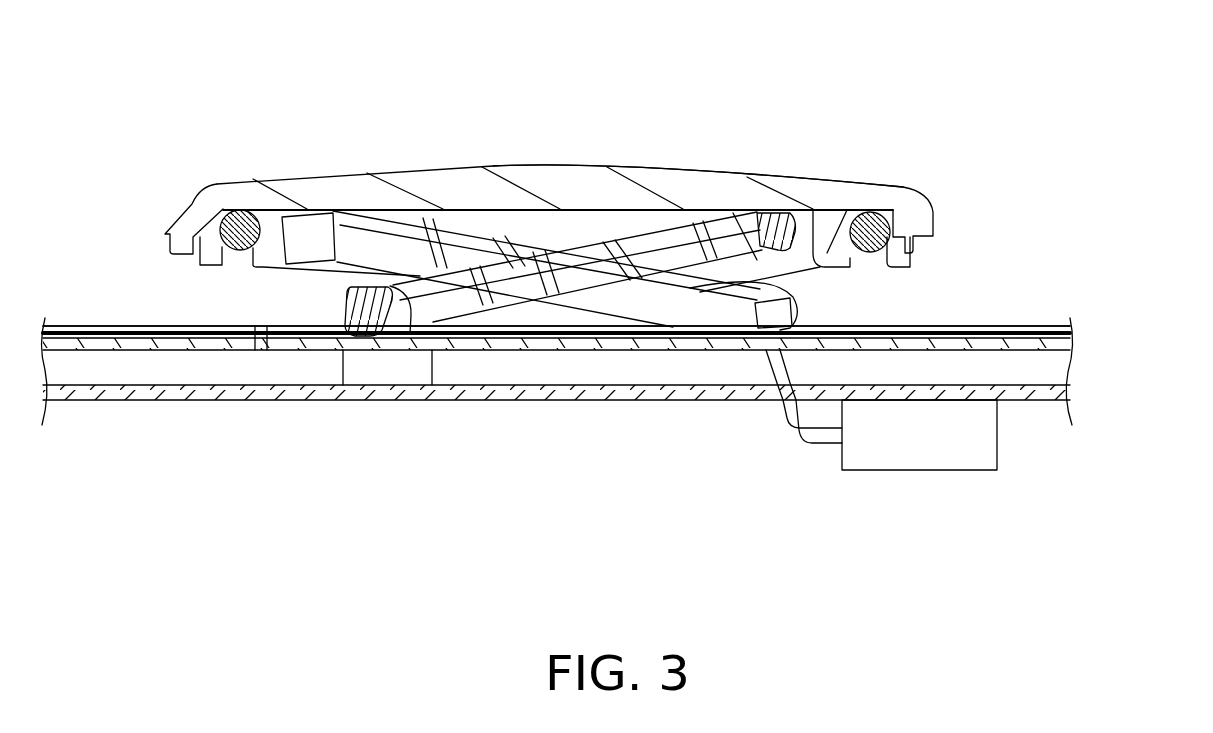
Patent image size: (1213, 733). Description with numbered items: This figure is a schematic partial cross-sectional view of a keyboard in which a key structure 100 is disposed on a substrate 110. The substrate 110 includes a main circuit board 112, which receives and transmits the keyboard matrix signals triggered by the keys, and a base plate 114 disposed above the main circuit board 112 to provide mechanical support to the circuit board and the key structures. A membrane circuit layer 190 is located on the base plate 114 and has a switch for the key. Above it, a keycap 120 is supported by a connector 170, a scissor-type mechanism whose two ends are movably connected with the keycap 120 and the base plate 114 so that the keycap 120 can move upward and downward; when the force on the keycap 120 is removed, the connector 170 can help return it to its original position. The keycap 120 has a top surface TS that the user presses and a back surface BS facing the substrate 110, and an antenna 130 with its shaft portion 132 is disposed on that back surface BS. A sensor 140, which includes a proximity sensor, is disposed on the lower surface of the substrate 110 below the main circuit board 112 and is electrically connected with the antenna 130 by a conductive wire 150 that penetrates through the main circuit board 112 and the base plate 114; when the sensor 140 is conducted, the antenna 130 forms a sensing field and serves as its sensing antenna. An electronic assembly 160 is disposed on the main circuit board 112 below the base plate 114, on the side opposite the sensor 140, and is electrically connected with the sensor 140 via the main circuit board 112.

The key structure 100 is at (905, 82).
The substrate 110 is at (619, 371).
The main circuit board 112 is at (1066, 393).
The base plate 114 is at (1066, 344).
The keycap 120 is at (742, 185).
The antenna 130 is at (238, 209).
The fastener shaft 132 is at (240, 230).
The sensor 140 is at (915, 448).
The conductive wire 150 is at (788, 408).
The electronic assembly 160 is at (375, 368).
The connector 170 is at (380, 245).
The membrane circuit layer 190 is at (975, 326).
The top surface TS is at (540, 160).
The back surface BS is at (622, 212).